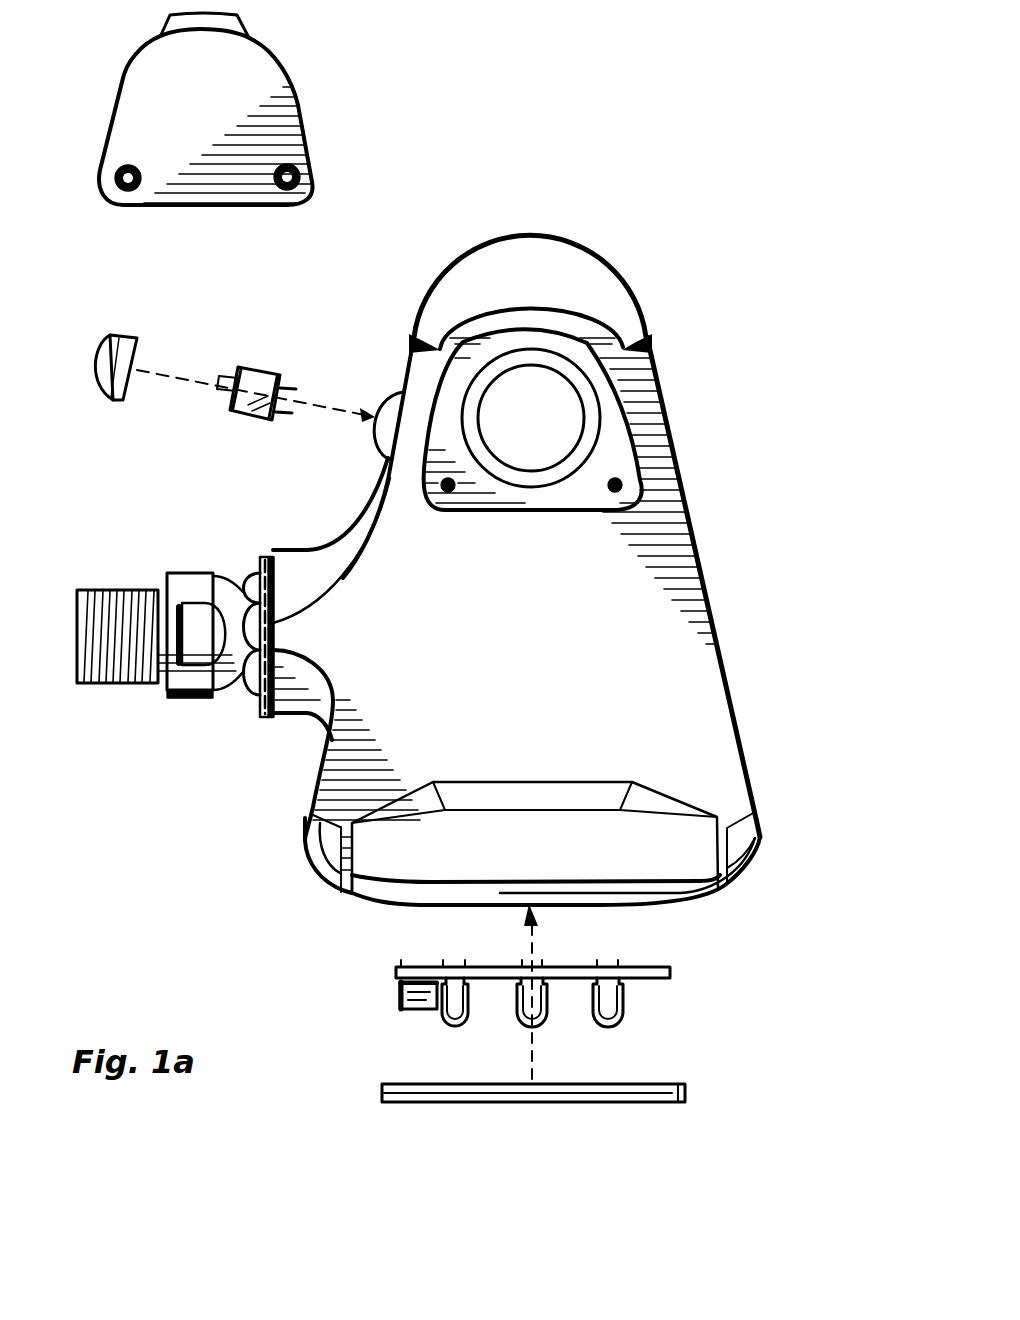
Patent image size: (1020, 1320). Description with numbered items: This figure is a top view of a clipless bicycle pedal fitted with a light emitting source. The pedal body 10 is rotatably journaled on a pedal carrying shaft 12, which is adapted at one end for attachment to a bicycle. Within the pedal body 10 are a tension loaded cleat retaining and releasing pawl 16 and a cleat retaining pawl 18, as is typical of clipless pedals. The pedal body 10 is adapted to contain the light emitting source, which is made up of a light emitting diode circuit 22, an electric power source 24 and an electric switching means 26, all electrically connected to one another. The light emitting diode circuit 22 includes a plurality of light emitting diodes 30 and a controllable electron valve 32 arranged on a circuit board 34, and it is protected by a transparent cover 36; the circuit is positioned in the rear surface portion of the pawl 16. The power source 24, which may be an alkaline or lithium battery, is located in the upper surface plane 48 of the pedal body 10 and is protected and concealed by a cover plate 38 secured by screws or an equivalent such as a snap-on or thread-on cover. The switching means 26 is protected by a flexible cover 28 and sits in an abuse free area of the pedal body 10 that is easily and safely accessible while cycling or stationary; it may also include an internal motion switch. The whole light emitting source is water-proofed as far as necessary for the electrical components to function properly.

The pedal body 10 is at (540, 530).
The pedal carrying shaft 12 is at (192, 586).
The cleat retaining and releasing pawl 16 is at (670, 848).
The cleat retaining pawl 18 is at (567, 280).
The light emitting diode circuit 22 is at (494, 987).
The electric power source 24 is at (563, 433).
The electric switching means 26 is at (253, 383).
The flexible cover 28 is at (113, 363).
The light emitting diodes 30 is at (624, 1003).
The controllable electron valve 32 is at (420, 1010).
The circuit board 34 is at (643, 960).
The transparent cover 36 is at (472, 1103).
The cover plate 38 is at (225, 88).
The upper surface plane 48 is at (427, 712).